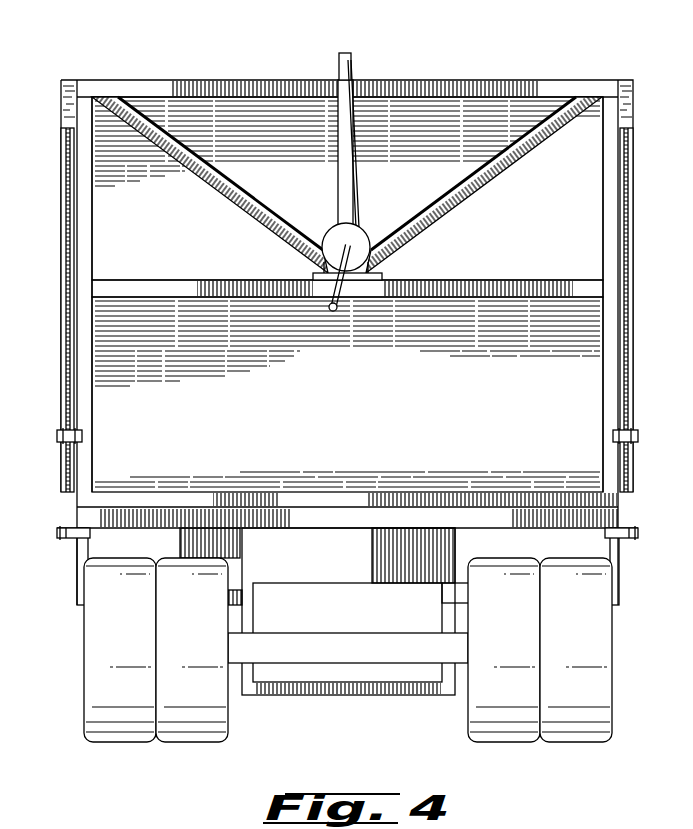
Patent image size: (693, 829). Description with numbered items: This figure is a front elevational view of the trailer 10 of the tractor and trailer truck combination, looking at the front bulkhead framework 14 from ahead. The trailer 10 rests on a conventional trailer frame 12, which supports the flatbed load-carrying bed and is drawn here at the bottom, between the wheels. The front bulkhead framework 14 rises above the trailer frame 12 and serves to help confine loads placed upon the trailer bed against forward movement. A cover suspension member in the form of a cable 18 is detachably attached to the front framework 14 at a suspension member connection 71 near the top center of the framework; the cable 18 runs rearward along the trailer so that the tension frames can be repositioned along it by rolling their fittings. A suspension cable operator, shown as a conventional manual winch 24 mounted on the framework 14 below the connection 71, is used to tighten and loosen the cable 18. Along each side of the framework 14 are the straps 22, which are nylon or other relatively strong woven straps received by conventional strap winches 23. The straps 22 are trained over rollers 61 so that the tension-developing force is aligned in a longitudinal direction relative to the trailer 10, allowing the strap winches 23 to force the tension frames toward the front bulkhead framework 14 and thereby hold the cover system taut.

The trailer portion 10 is at (183, 54).
The trailer frame 12 is at (307, 557).
The front bulkhead framework 14 is at (339, 410).
The cable 18 is at (360, 207).
The straps 22 is at (64, 246).
The strap winches 23 is at (58, 435).
The manual winch 24 is at (336, 238).
The rollers 61 is at (62, 137).
The suspension member connection 71 is at (353, 63).